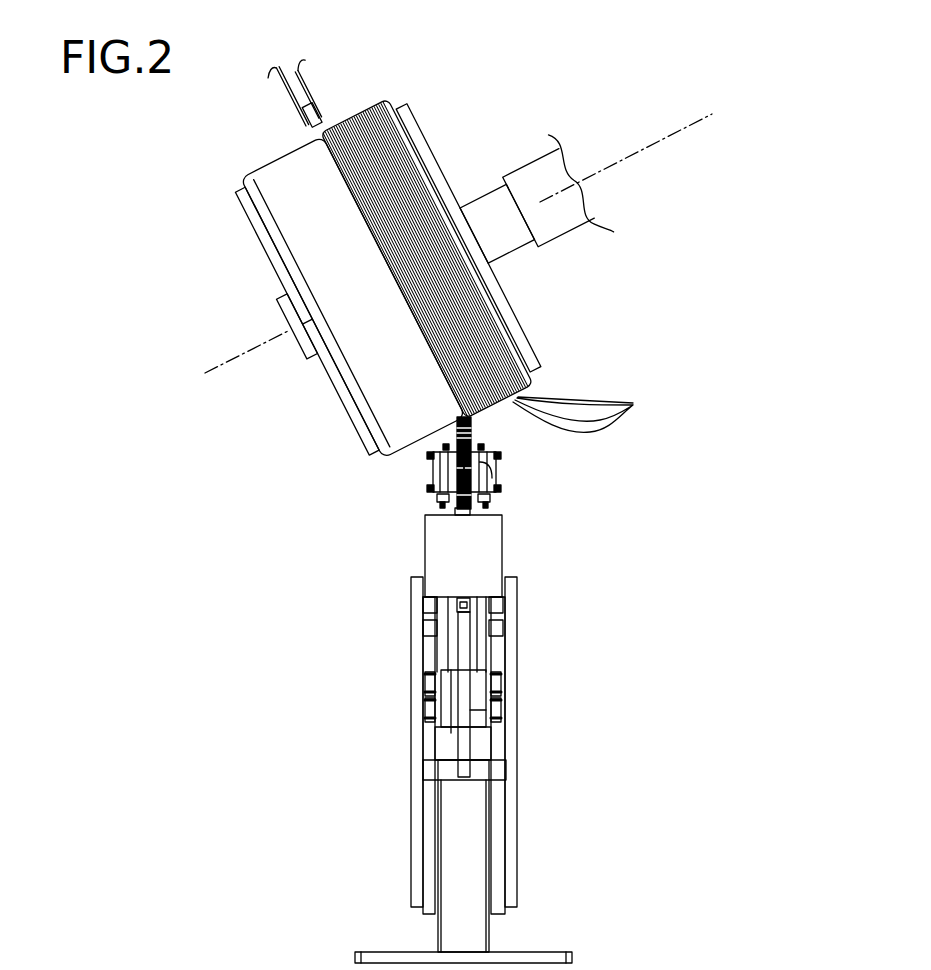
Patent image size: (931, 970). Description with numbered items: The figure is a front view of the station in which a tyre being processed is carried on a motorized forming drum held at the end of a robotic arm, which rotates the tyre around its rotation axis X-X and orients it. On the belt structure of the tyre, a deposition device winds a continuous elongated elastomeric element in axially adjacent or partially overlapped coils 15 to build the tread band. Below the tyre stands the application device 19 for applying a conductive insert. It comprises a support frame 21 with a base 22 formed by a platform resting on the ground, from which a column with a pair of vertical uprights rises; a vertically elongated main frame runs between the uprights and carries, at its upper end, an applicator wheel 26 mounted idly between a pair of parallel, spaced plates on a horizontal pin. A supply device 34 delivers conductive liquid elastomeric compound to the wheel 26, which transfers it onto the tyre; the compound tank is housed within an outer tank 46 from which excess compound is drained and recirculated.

The coils 15 is at (590, 411).
The application device 19 is at (540, 650).
The support frame 21 is at (540, 740).
The base 22 is at (566, 944).
The wheel 26 is at (490, 435).
The supply device 34 is at (414, 536).
The outer tank 46 is at (452, 572).
The rotation axis X-X is at (547, 198).